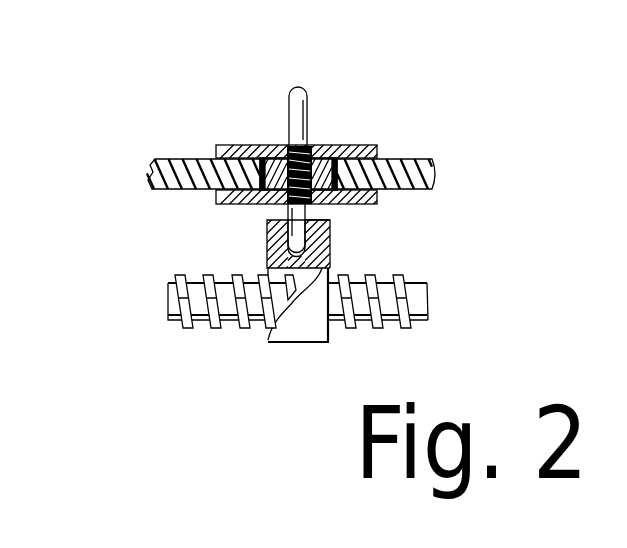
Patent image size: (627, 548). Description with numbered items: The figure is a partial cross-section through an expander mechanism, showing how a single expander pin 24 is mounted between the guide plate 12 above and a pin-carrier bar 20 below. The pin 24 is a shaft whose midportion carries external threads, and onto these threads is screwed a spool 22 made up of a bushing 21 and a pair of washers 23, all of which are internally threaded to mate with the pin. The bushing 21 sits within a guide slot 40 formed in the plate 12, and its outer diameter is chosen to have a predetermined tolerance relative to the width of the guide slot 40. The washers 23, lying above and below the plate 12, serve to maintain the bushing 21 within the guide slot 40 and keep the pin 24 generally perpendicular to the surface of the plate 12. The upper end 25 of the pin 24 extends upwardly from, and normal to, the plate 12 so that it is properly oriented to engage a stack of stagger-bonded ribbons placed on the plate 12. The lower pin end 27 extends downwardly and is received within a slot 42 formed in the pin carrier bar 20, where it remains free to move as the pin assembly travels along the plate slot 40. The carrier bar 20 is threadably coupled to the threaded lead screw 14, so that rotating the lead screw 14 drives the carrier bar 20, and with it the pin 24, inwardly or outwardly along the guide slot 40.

The guide plate 12 is at (230, 146).
The threaded lead screw 14 is at (393, 330).
The pin-carrier bar 20 is at (280, 332).
The bushing 21 is at (337, 177).
The spool 22 is at (366, 146).
The washers 23 is at (214, 150).
The expander pin 24 is at (289, 131).
The upper end of pin 25 is at (307, 100).
The lower pin end 27 is at (330, 237).
The guide slot 40 is at (262, 205).
The slot 42 is at (267, 255).